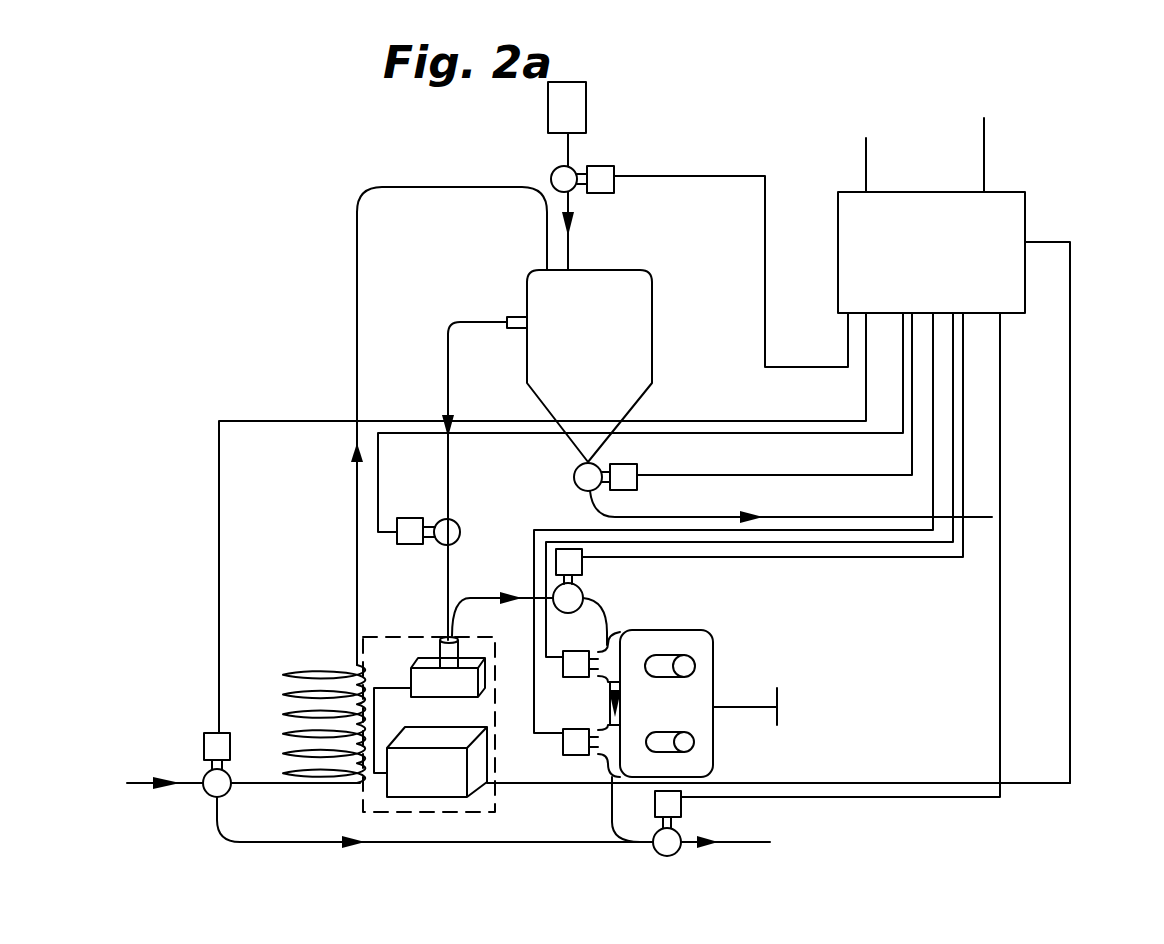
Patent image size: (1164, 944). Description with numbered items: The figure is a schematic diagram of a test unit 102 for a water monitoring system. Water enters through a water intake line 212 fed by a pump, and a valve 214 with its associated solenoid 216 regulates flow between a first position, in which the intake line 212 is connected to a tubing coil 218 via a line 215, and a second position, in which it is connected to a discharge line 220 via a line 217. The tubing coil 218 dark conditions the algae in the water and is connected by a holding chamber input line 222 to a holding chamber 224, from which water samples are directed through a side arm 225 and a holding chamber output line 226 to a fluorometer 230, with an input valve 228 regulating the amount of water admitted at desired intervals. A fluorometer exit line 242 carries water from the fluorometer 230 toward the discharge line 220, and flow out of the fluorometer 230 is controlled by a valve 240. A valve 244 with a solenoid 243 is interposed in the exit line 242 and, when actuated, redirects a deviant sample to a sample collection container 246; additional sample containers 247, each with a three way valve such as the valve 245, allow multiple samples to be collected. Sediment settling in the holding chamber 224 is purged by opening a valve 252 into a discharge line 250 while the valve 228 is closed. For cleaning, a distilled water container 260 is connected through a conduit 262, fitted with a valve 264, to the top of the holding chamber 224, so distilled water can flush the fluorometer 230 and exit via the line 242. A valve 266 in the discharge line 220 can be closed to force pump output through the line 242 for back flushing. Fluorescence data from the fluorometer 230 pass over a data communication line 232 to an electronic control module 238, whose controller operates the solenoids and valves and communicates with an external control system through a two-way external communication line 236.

The test unit 102 is at (383, 126).
The water intake line 212 is at (186, 782).
The valve 214 is at (204, 791).
The line 215 is at (257, 784).
The solenoid 216 is at (212, 735).
The line 217 is at (297, 843).
The tubing coil 218 is at (318, 665).
The discharge line 220 is at (727, 843).
The holding chamber input line 222 is at (357, 290).
The holding chamber 224 is at (610, 270).
The side arm 225 is at (510, 316).
The holding chamber output line 226 is at (449, 468).
The input valve 228 is at (458, 522).
The fluorometer 230 is at (505, 764).
The data communication line 232 is at (1000, 657).
The 2-way external communication line 236 is at (984, 135).
The control module 238 is at (1025, 210).
The valve 240 is at (583, 595).
The fluorometer exit line 242 is at (607, 612).
The solenoid 243 is at (588, 682).
The valve 244 is at (607, 630).
The three way valve 245 is at (605, 765).
The sample collection container 246 is at (690, 665).
The additional sample containers 247 is at (690, 745).
The discharge line 250 is at (672, 516).
The valve 252 is at (575, 476).
The distilled water container 260 is at (586, 104).
The conduit 262 is at (568, 148).
The valve 264 is at (572, 191).
The valve 266 is at (672, 857).